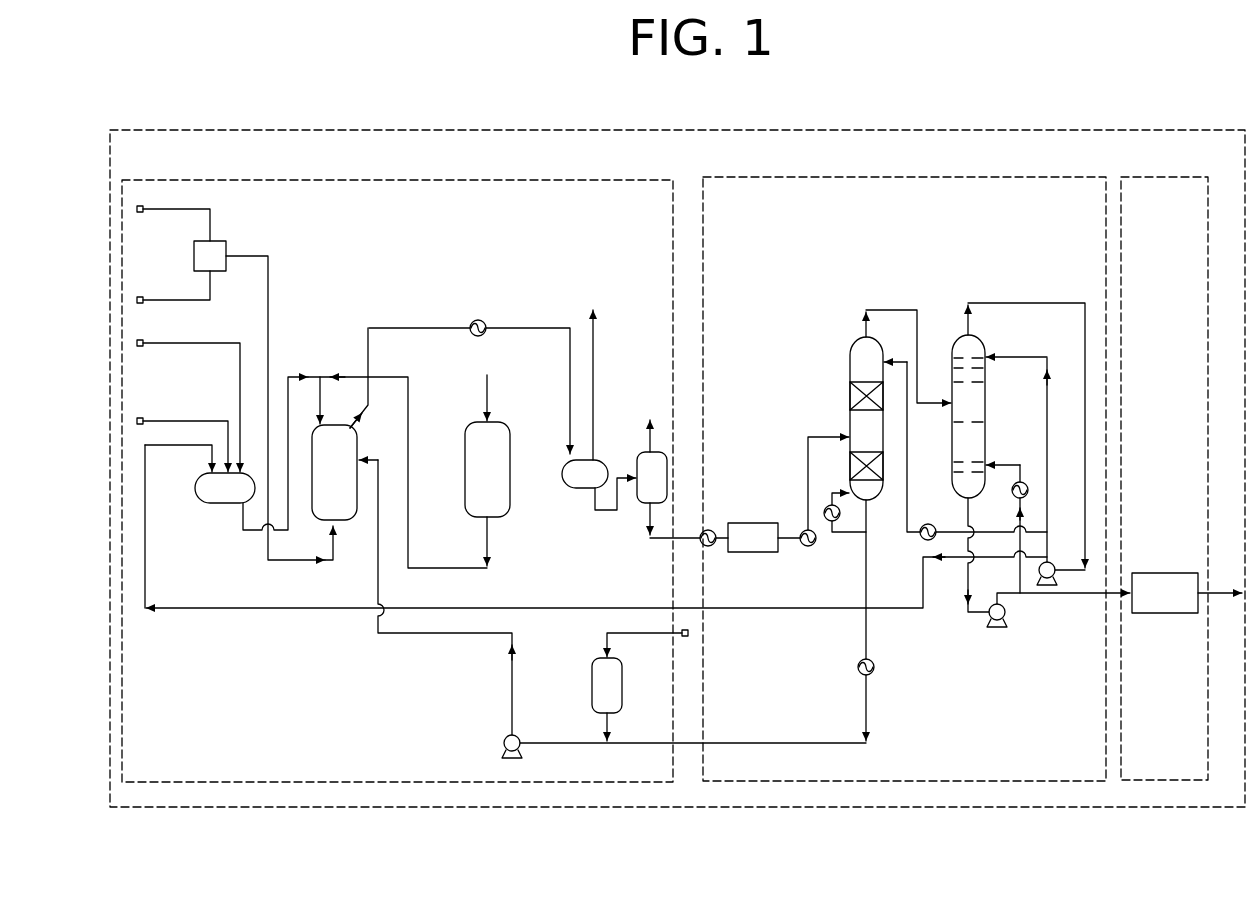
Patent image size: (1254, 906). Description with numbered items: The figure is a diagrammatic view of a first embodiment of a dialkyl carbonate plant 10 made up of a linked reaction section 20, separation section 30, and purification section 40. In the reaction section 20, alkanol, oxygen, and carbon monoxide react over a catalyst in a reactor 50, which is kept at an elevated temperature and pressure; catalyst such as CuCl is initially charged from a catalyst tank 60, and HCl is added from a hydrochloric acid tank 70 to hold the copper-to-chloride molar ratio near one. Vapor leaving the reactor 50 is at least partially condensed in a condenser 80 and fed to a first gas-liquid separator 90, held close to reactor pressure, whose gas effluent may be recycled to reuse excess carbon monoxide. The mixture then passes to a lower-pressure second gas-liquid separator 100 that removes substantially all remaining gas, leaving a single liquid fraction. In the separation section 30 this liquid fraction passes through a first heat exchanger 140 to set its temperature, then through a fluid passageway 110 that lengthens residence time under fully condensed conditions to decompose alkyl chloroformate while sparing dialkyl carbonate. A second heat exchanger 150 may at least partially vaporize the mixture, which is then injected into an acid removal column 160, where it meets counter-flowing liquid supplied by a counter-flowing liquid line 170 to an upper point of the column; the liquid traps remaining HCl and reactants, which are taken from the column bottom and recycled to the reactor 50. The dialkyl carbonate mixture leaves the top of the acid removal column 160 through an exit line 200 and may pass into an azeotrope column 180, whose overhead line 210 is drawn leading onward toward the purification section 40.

The dialkyl carbonate plant 10 is at (1023, 130).
The reaction section 20 is at (278, 180).
The separation section 30 is at (858, 177).
The purification section 40 is at (1142, 177).
The reactor 50 is at (348, 521).
The catalyst tank 60 is at (475, 516).
The hydrochloric acid tank 70 is at (592, 688).
The condenser 80 is at (478, 318).
The first gas-liquid separator 90 is at (560, 475).
The second gas-liquid separator 100 is at (637, 505).
The fluid passageway 110 is at (770, 522).
The first heat exchanger 140 is at (708, 546).
The second heat exchanger 150 is at (808, 546).
The acid removal column 160 is at (850, 362).
The counter-flowing liquid line 170 is at (907, 480).
The azeotrope column 180 is at (983, 338).
The exit line 200 is at (890, 310).
The overhead line 210 is at (996, 302).